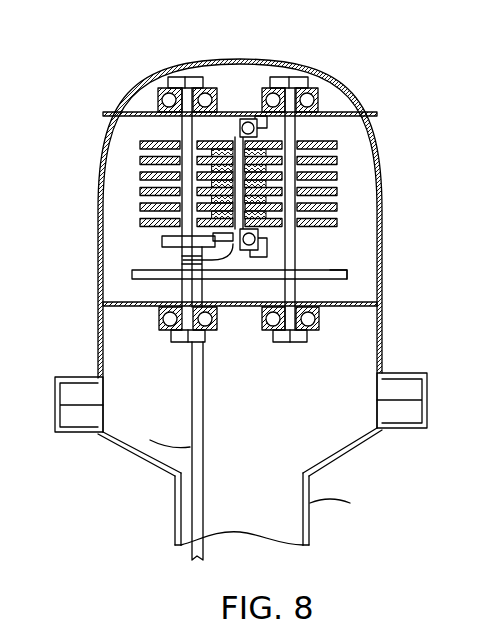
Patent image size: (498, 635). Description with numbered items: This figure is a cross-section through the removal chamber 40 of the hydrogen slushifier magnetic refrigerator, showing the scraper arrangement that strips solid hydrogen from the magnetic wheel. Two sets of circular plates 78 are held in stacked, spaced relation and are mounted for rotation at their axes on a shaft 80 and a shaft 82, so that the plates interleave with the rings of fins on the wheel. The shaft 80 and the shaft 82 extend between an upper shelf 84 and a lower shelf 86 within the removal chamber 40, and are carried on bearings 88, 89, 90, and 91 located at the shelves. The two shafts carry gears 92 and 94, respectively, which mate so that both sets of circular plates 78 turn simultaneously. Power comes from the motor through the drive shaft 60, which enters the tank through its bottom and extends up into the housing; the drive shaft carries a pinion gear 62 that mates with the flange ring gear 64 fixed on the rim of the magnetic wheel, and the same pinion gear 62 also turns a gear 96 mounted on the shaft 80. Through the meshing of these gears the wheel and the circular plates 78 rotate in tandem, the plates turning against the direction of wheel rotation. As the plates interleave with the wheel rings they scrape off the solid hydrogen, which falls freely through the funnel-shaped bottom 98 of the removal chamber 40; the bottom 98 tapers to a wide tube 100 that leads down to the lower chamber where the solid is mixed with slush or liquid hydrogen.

The removal chamber 40 is at (383, 162).
The drive shaft 60 is at (165, 448).
The pinion gear 62 is at (162, 238).
The flange ring gear 64 is at (183, 258).
The circular plates 78 is at (140, 177).
The shaft 80 is at (170, 116).
The shaft 82 is at (297, 250).
The upper shelf 84 is at (342, 98).
The lower shelf 86 is at (360, 301).
The bearing 88 is at (157, 94).
The bearing 89 is at (318, 99).
The bearing 90 is at (160, 320).
The bearing 91 is at (320, 328).
The gear 92 is at (155, 282).
The gear 94 is at (347, 273).
The gear 96 is at (163, 242).
The bottom 98 is at (350, 448).
The wide tube 100 is at (310, 505).